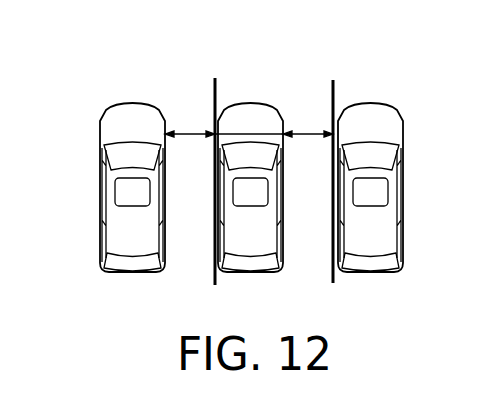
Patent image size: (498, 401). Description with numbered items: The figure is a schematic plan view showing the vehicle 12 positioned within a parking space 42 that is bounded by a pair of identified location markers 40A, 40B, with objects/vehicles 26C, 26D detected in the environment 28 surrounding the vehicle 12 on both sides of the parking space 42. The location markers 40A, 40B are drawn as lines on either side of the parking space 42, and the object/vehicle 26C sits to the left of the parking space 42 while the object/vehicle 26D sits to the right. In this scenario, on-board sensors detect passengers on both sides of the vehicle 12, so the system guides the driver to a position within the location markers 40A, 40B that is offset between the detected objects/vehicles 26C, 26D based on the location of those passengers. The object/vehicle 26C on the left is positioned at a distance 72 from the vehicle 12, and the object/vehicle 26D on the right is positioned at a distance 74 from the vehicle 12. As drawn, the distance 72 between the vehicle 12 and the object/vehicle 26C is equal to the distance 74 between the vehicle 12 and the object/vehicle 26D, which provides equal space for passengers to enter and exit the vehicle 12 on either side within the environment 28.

The vehicle 12 is at (264, 243).
The object/vehicle 26C is at (113, 107).
The object/vehicle 26D is at (395, 108).
The environment 28 is at (185, 306).
The location marker 40A is at (213, 85).
The location marker 40B is at (333, 283).
The parking space 42 is at (293, 98).
The distance 72 is at (190, 130).
The distance 74 is at (310, 130).